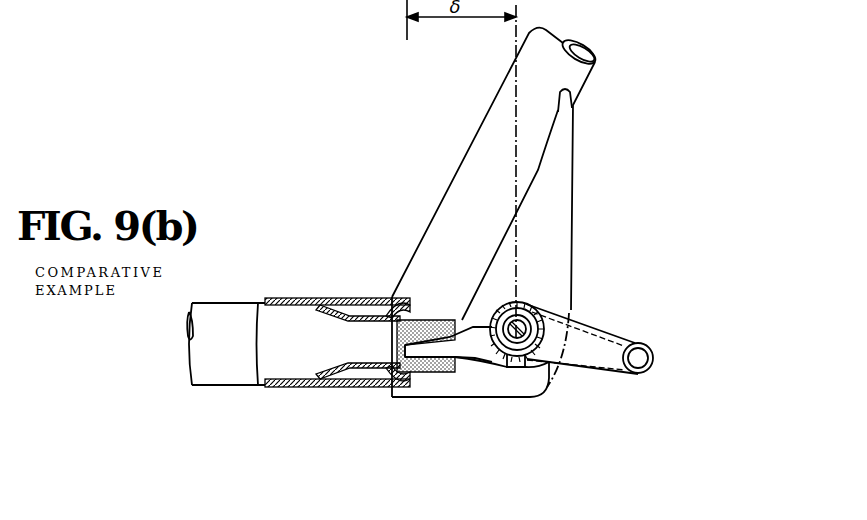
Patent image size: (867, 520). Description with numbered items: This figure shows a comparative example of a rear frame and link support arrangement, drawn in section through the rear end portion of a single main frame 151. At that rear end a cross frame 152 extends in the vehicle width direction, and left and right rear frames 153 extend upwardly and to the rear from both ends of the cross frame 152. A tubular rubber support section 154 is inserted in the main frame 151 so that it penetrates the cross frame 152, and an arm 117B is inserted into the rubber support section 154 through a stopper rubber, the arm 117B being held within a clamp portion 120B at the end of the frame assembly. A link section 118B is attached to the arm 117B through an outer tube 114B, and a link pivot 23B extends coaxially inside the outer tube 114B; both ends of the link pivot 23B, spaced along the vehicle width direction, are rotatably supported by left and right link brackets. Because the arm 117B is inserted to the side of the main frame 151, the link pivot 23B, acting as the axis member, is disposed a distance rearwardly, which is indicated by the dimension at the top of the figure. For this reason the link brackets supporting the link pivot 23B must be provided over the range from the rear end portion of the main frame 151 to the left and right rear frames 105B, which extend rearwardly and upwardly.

The main frame 151 is at (285, 388).
The rubber support section 154 is at (357, 388).
The cross frame 152 is at (405, 388).
The clamp holder 120B is at (385, 388).
The arm 117B is at (478, 352).
The support bracket 114B is at (508, 363).
The link pivot 23B is at (530, 360).
The link section 118B is at (598, 355).
The rear frame 153 is at (453, 213).
The rear frame 105B is at (545, 246).